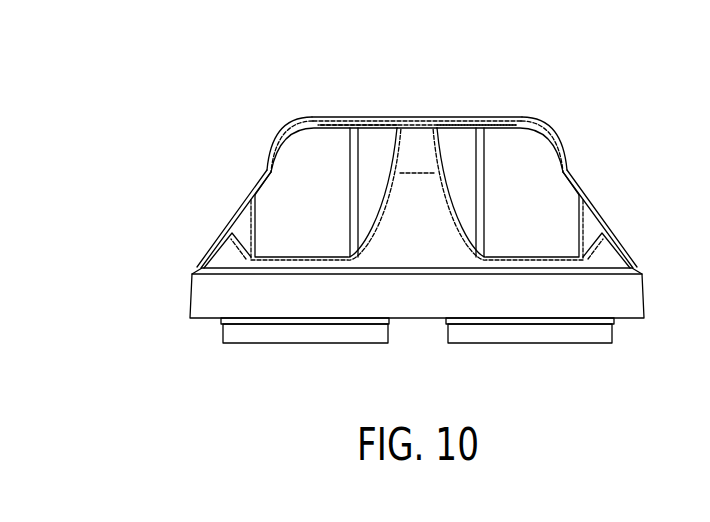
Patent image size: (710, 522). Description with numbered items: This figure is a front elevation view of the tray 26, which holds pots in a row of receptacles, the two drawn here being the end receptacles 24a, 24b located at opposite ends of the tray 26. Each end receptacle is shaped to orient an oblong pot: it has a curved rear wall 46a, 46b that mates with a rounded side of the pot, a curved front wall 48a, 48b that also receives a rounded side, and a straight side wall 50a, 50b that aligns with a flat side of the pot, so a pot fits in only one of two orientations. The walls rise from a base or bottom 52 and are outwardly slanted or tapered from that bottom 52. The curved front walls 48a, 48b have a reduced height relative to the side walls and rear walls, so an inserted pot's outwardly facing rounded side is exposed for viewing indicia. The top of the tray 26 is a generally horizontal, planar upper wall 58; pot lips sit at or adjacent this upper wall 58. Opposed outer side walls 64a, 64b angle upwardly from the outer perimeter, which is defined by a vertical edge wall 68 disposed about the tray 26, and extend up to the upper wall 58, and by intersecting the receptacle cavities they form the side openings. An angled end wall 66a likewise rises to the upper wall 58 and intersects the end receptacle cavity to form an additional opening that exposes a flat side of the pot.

The tray 26 is at (417, 143).
The end receptacle 24a is at (538, 150).
The end receptacle 24b is at (297, 150).
The curved rear wall 46a is at (455, 145).
The curved rear wall 46b is at (384, 145).
The curved front wall 48a is at (590, 233).
The curved front wall 48b is at (247, 233).
The straight side wall 50a is at (521, 247).
The straight side wall 50b is at (303, 167).
The upper wall 58 is at (418, 118).
The angled outer side wall 64a is at (213, 255).
The angled outer side wall 64b is at (621, 255).
The angled end wall 66a is at (404, 242).
The vertical edge wall 68 is at (538, 302).
The bottom 52 is at (300, 343).